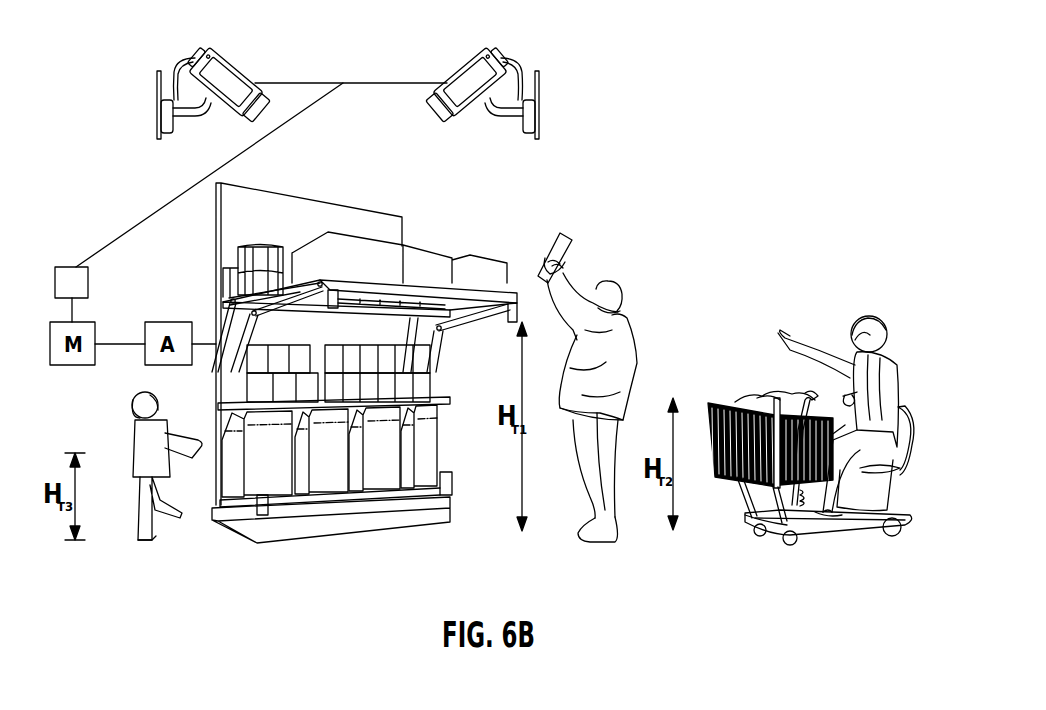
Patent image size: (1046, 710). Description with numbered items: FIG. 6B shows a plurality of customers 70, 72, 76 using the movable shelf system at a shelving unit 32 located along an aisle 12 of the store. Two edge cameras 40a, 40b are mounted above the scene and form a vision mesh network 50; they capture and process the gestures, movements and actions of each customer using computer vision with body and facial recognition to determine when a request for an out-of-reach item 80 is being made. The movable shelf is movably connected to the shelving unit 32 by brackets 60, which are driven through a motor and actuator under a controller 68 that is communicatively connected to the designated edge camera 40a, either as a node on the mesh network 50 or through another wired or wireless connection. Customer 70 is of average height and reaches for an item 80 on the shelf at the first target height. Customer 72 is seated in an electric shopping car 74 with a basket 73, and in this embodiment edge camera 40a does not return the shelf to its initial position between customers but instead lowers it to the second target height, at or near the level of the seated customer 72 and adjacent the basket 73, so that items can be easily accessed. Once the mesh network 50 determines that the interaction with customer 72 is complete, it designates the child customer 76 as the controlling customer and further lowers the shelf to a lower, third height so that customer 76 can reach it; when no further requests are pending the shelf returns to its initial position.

The aisle 12 is at (337, 388).
The shelving unit 32 is at (358, 549).
The edge camera 40a is at (234, 72).
The edge camera 40b is at (476, 62).
The mesh network 50 is at (332, 83).
The brackets 60 is at (441, 334).
The controller 68 is at (70, 267).
The customer 70 is at (624, 302).
The customer 72 is at (891, 363).
The basket 73 is at (736, 480).
The electric shopping car 74 is at (862, 547).
The customer 76 is at (146, 541).
The item 80 is at (436, 258).